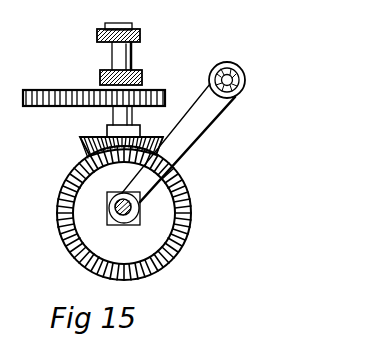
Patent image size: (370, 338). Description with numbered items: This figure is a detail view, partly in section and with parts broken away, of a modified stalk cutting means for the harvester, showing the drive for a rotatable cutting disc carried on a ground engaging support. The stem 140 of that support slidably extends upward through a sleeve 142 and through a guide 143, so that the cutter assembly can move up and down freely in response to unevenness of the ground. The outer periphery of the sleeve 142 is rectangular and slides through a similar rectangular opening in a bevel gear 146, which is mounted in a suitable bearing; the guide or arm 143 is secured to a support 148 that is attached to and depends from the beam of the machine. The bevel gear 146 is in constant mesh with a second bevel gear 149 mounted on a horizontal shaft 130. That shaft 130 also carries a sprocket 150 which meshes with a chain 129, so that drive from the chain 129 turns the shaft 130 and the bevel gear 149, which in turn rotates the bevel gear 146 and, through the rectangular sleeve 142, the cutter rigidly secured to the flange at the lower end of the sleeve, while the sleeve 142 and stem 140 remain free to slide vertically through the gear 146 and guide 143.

The chain 129 is at (50, 91).
The horizontal shaft 130 is at (118, 115).
The stem 140 is at (124, 214).
The sleeve 142 is at (139, 219).
The guide 143 is at (178, 140).
The bevel gear 146 is at (58, 188).
The support 148 is at (234, 95).
The bevel gear 149 is at (85, 143).
The sprocket 150 is at (142, 88).